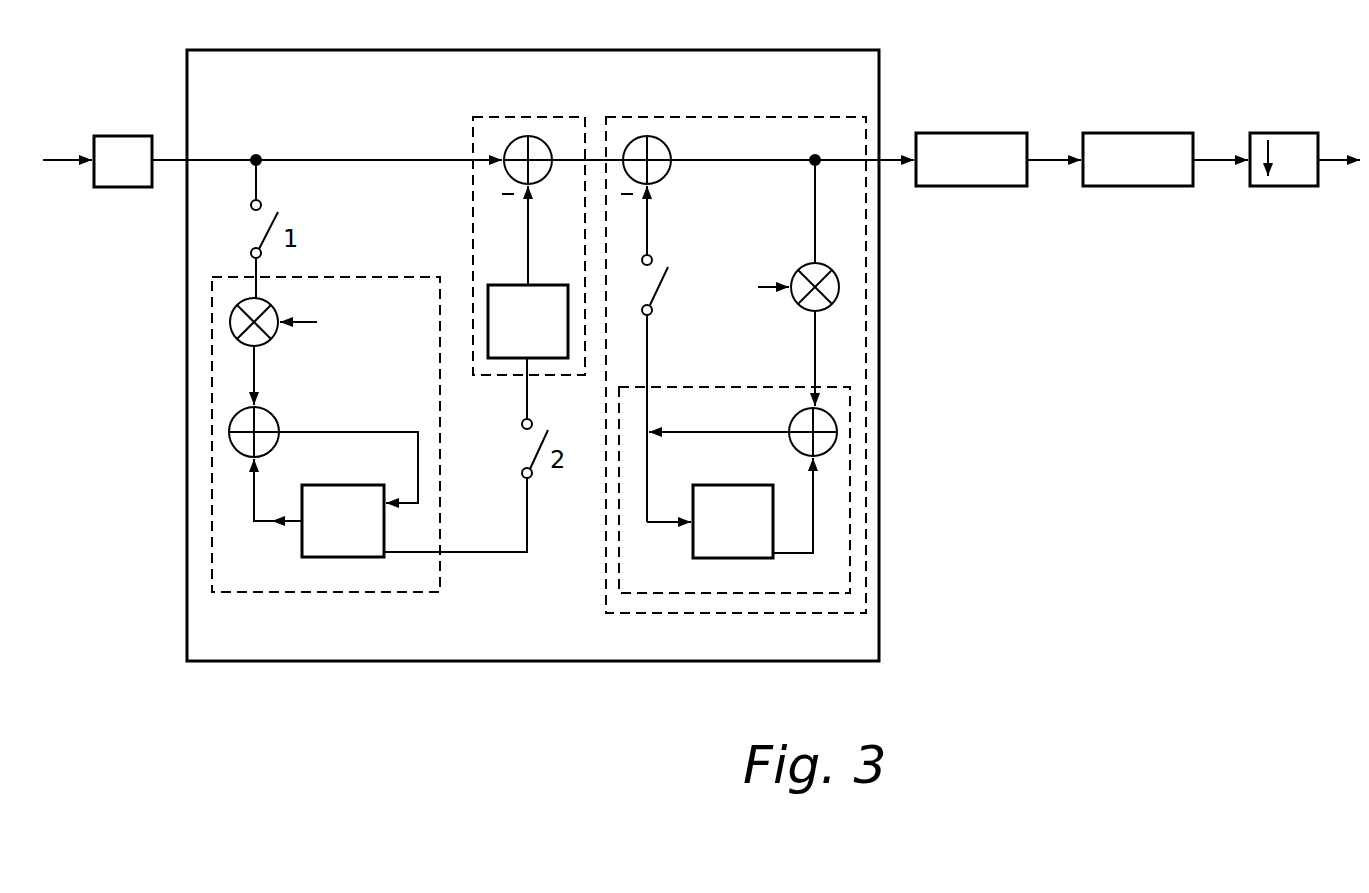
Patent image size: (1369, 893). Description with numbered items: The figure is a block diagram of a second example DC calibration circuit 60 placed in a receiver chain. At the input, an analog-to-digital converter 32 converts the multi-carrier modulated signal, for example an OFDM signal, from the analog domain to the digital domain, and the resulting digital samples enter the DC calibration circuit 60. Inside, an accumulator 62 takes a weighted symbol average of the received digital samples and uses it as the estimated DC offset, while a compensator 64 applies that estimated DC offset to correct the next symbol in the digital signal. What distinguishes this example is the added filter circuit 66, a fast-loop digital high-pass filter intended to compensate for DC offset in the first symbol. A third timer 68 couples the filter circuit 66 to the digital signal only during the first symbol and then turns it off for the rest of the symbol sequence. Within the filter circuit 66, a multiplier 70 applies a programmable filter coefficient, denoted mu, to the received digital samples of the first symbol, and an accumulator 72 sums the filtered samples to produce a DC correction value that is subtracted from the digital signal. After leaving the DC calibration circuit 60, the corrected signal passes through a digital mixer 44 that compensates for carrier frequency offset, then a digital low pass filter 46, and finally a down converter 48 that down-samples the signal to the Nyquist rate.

The analog-to-digital converter 32 is at (118, 136).
The DC calibration circuit 60 is at (655, 50).
The accumulator 62 is at (308, 277).
The compensator 64 is at (535, 117).
The filter circuit 66 is at (747, 117).
The third timer 68 is at (660, 262).
The multiplier 70 is at (802, 263).
The accumulator 72 is at (702, 387).
The digital mixer 44 is at (978, 133).
The digital low pass filter 46 is at (1147, 133).
The down converter 48 is at (1288, 133).